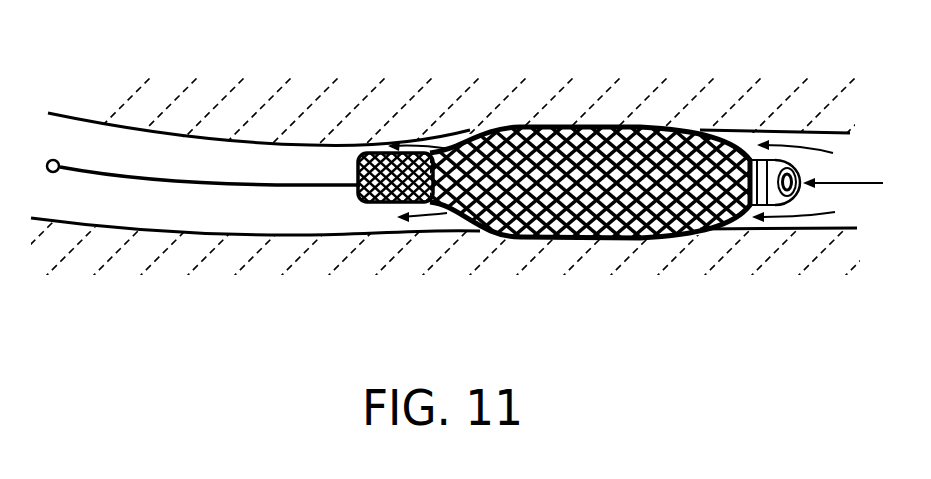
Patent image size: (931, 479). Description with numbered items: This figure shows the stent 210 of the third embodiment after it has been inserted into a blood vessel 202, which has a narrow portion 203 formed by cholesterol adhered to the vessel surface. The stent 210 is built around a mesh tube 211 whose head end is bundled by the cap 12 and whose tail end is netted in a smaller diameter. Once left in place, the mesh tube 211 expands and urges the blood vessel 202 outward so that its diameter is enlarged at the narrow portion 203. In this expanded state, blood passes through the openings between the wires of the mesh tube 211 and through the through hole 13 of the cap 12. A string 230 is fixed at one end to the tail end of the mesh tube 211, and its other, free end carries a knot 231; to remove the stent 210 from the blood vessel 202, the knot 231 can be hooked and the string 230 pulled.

The blood vessel 202 is at (305, 145).
The narrow portion 203 is at (630, 127).
The mesh tube 211 is at (503, 135).
The stent 210 is at (591, 179).
The cap 12 is at (757, 197).
The through hole 13 is at (802, 173).
The string 230 is at (202, 187).
The knot 231 is at (54, 173).